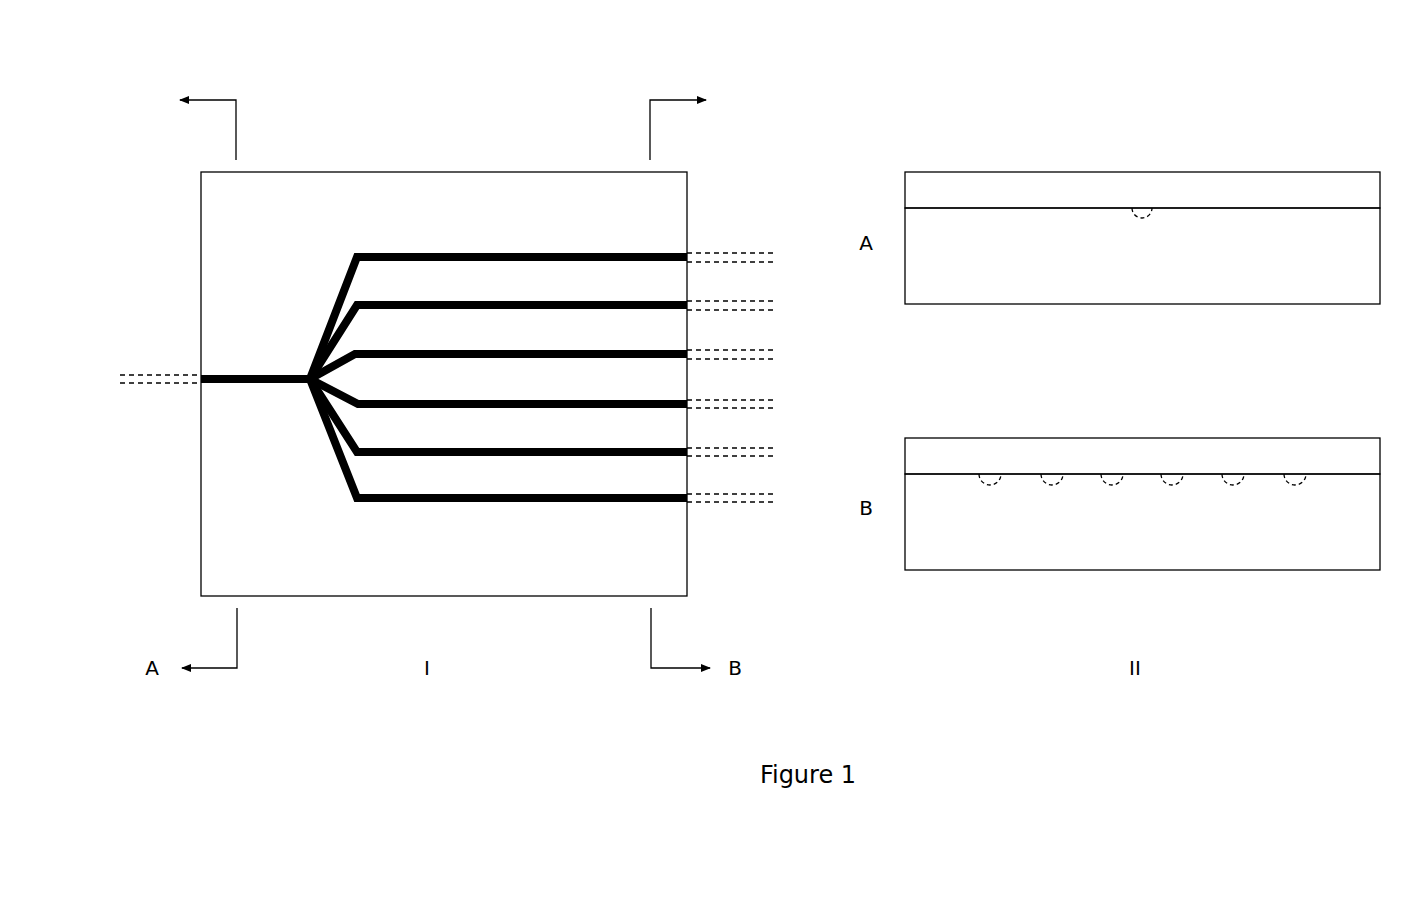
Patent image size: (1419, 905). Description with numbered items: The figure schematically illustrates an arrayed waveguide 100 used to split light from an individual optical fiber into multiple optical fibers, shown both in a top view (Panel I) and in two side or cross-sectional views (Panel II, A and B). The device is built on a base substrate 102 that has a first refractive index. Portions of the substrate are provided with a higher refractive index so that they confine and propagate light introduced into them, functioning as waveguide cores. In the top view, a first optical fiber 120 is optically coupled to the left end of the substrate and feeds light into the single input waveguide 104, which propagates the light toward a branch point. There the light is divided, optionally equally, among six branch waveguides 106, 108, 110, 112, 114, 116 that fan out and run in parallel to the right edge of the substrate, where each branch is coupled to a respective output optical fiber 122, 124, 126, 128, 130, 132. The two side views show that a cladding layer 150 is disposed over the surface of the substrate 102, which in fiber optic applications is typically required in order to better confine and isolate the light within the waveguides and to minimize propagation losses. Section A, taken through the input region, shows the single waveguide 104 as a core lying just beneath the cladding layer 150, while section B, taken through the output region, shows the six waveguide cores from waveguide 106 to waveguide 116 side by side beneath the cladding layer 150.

The arrayed waveguide 100 is at (750, 120).
The base substrate 102 is at (1120, 284).
The waveguide 104 is at (270, 370).
The waveguide 106 is at (985, 489).
The waveguide 108 is at (686, 380).
The waveguide 110 is at (716, 404).
The waveguide 112 is at (746, 428).
The waveguide 114 is at (777, 432).
The waveguide 116 is at (1318, 510).
The first optical fiber 120 is at (161, 372).
The optical fiber 122 is at (730, 243).
The optical fiber 124 is at (730, 292).
The optical fiber 126 is at (730, 341).
The optical fiber 128 is at (730, 389).
The optical fiber 130 is at (730, 438).
The optical fiber 132 is at (730, 484).
The cladding layer 150 is at (1260, 181).